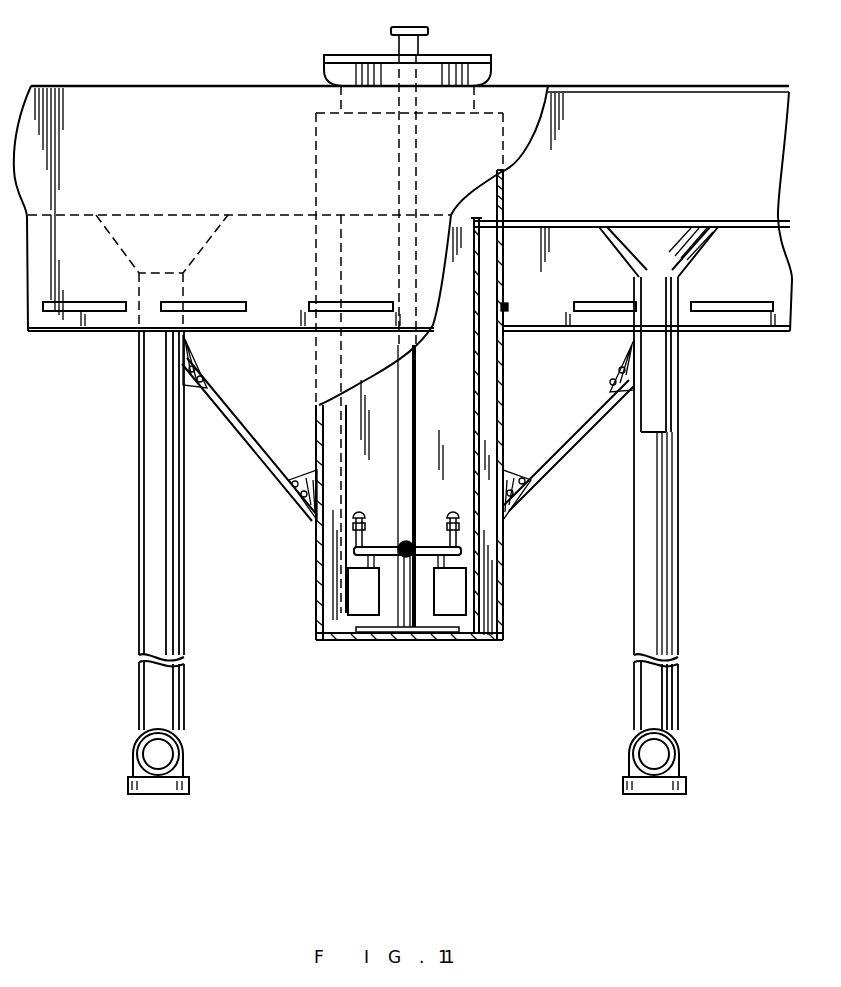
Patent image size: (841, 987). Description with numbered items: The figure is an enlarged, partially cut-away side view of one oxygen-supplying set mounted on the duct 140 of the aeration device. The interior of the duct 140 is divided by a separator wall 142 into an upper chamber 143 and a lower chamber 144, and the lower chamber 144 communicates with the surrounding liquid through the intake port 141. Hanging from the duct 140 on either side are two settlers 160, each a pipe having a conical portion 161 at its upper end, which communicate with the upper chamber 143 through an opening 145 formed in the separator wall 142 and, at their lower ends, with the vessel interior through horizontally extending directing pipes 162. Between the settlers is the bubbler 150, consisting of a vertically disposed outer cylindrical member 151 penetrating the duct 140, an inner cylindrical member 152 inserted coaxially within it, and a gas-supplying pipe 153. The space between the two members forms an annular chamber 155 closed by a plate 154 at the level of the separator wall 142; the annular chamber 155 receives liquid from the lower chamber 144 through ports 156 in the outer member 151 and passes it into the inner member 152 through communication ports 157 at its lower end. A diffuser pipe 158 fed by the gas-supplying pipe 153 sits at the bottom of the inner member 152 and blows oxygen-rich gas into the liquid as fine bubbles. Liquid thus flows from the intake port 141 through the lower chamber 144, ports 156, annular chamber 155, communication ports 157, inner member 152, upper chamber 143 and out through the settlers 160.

The duct 140 is at (652, 81).
The intake port 141 is at (85, 312).
The separator wall 142 is at (582, 221).
The upper chamber 143 is at (667, 165).
The lower chamber 144 is at (762, 283).
The opening 145 is at (673, 223).
The bubbler 150 is at (511, 580).
The cylindrical member 151 is at (502, 557).
The inner cylindrical member 152 is at (340, 544).
The gas-supplying pipe 153 is at (416, 406).
The plate 154 is at (500, 213).
The annular chamber 155 is at (494, 412).
The port 156 is at (507, 311).
The communication port 157 is at (372, 608).
The diffuser pipe 158 is at (378, 497).
The settler 160 is at (148, 447).
The conical portion 161 is at (620, 261).
The directing pipe 162 is at (181, 758).